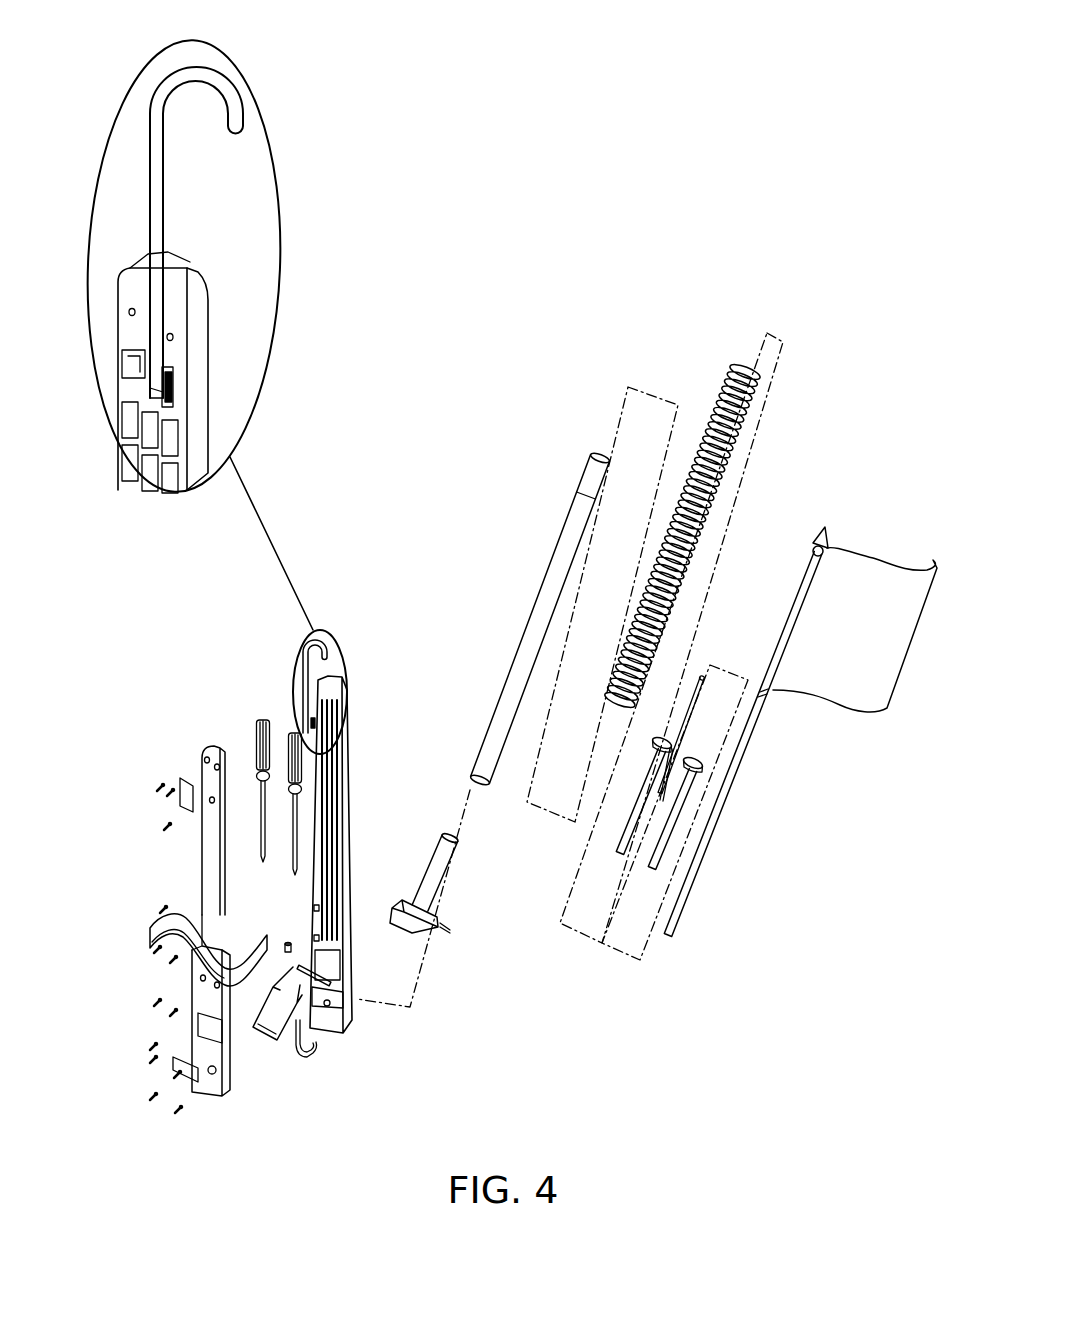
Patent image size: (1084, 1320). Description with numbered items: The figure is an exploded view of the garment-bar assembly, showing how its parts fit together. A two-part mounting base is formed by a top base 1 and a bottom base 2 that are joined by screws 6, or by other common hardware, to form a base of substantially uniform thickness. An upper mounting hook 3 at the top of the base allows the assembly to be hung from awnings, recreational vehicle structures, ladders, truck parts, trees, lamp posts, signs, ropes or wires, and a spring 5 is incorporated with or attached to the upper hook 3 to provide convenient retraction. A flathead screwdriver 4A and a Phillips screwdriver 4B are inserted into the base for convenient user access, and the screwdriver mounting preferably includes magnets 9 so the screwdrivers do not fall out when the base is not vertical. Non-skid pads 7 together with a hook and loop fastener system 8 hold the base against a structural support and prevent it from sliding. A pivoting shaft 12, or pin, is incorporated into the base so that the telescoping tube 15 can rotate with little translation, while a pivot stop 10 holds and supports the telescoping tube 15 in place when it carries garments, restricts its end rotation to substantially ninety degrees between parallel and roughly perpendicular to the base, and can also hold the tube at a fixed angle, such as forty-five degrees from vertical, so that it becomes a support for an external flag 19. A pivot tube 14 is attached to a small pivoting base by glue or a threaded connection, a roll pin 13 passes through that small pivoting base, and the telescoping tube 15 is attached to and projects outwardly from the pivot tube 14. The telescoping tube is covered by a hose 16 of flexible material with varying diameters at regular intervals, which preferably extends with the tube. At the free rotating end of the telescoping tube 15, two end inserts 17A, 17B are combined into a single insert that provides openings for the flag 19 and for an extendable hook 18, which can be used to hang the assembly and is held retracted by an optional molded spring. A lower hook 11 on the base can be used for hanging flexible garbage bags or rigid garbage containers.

The top base 1 is at (212, 297).
The bottom base 2 is at (202, 747).
The upper mounting hook 3 is at (250, 120).
The flathead screwdriver 4A is at (288, 730).
The Phillips screwdriver 4B is at (255, 733).
The spring 5 is at (177, 387).
The screws 6 is at (152, 785).
The non-skid pads 7 is at (148, 802).
The hook and loop fastener system 8 is at (148, 935).
The magnets 9 is at (285, 943).
The pivot stop 10 is at (278, 1042).
The lower hook 11 is at (313, 1058).
The pivoting shaft 12 is at (303, 960).
The roll pin 13 is at (452, 932).
The pivot tube 14 is at (453, 878).
The telescoping tube 15 is at (525, 608).
The hose 16 is at (718, 398).
The end insert A 17A is at (707, 763).
The end insert B 17B is at (645, 755).
The extendable hook 18 is at (703, 668).
The flag 19 is at (873, 547).